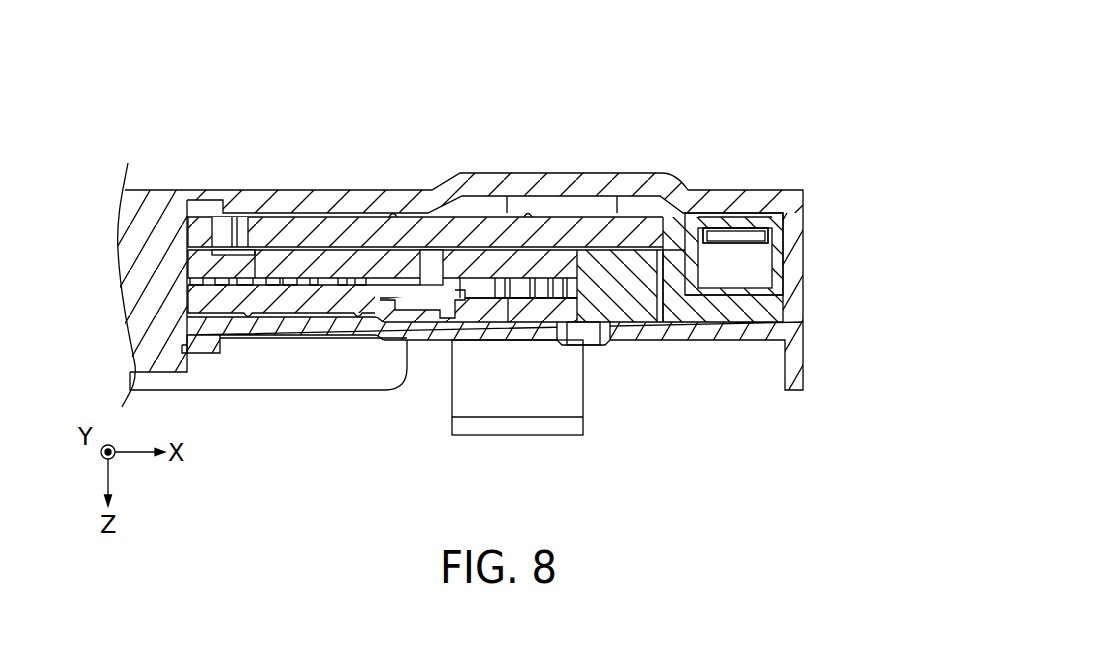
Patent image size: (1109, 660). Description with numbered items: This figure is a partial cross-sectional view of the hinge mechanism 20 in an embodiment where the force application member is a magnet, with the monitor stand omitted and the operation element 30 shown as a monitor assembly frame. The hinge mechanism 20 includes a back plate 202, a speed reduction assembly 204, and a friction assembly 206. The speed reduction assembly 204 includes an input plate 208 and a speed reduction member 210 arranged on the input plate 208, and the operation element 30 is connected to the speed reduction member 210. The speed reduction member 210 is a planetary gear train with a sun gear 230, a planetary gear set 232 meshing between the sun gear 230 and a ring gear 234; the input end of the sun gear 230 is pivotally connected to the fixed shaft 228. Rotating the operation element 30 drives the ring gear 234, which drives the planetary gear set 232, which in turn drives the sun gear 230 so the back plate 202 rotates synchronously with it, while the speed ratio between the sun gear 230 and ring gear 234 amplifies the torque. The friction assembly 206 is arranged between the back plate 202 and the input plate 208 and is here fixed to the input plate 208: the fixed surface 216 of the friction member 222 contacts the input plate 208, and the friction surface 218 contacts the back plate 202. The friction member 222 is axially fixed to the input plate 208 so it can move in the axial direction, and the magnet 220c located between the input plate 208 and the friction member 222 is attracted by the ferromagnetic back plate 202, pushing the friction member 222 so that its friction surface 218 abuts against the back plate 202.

The hinge mechanism 20 is at (95, 70).
The operation element 30 is at (637, 330).
The back plate 202 is at (515, 183).
The speed reduction assembly 204 is at (885, 10).
The friction assembly 206 is at (900, 205).
The input plate 208 is at (790, 300).
The speed reduction member 210 is at (800, 195).
The fixed surface 216 is at (752, 328).
The friction surface 218 is at (745, 198).
The magnet 220c is at (750, 238).
The friction member 222 is at (757, 210).
The fixed shaft 228 is at (155, 220).
The sun gear 230 is at (217, 245).
The planetary gear set 232 is at (343, 267).
The ring gear 234 is at (613, 285).